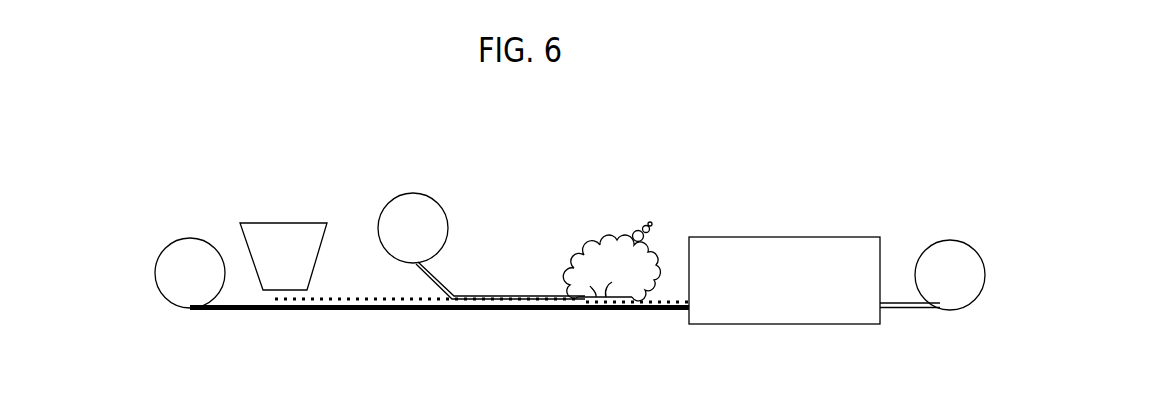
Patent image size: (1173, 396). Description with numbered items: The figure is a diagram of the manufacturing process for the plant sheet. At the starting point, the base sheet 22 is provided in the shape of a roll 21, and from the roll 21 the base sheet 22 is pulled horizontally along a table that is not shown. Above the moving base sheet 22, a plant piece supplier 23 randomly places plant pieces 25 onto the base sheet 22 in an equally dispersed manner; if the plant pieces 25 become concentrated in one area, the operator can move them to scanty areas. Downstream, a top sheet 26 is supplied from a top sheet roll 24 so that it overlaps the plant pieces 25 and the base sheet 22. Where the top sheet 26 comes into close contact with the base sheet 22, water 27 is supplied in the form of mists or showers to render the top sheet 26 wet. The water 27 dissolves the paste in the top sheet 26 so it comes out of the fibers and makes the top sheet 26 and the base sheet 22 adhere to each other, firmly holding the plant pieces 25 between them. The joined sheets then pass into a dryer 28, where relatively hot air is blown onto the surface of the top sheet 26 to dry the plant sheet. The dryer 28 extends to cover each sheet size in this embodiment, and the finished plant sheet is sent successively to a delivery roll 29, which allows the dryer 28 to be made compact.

The roll 21 is at (170, 290).
The base sheet 22 is at (249, 311).
The plant piece supplier 23 is at (280, 233).
The top sheet roll 24 is at (421, 204).
The plant pieces 25 is at (348, 295).
The top sheet 26 is at (513, 296).
The water 27 is at (607, 310).
The dryer 28 is at (765, 245).
The delivery roll 29 is at (963, 256).